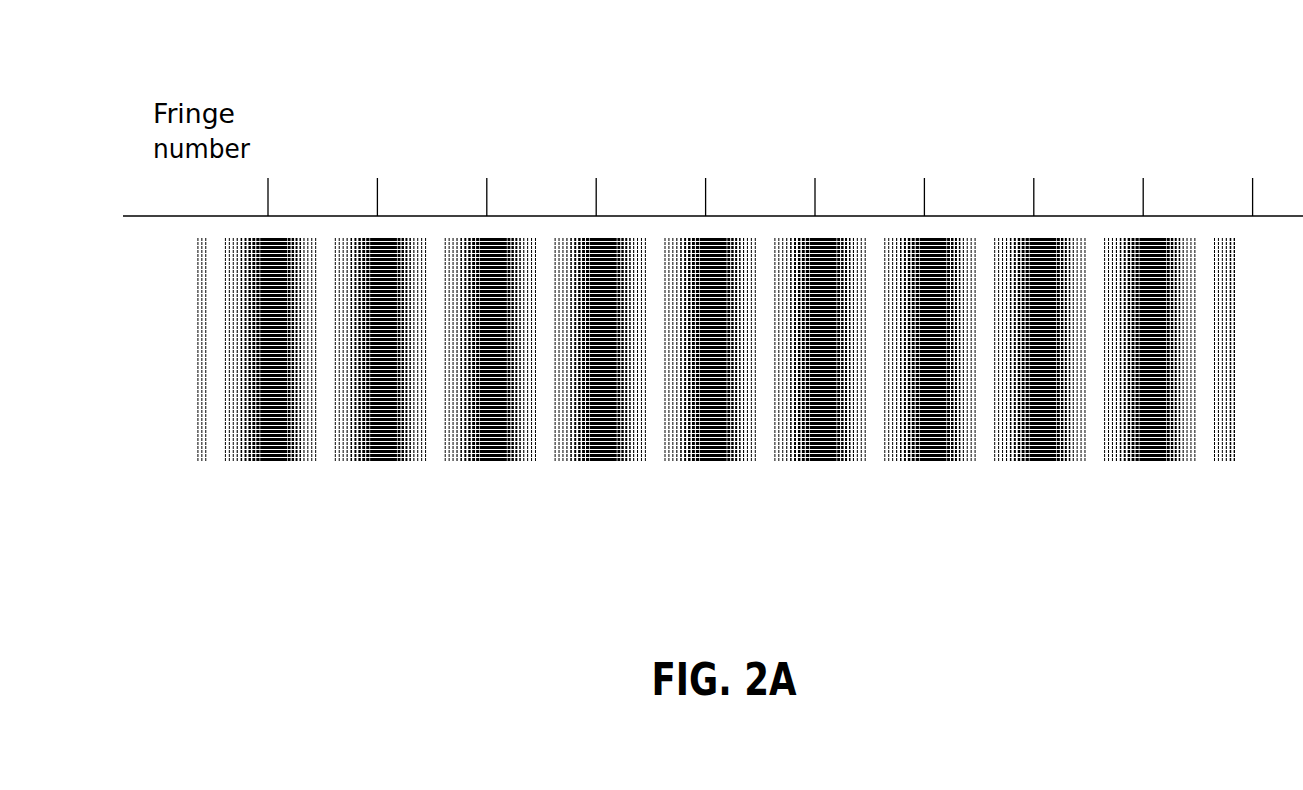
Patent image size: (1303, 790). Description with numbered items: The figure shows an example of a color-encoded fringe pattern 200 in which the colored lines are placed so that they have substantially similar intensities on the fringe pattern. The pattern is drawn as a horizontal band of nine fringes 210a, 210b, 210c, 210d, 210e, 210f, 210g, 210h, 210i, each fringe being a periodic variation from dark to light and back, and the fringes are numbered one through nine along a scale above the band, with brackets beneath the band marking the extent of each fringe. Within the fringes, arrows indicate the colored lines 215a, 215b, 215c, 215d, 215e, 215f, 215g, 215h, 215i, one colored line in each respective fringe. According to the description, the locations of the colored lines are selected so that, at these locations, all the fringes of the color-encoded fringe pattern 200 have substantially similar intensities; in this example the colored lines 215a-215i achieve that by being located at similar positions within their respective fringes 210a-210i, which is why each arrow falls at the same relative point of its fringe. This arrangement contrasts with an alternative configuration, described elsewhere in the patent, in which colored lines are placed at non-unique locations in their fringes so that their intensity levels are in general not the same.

The color-encoded fringe pattern 200 is at (1208, 598).
The fringe 210a is at (276, 482).
The fringe 210b is at (385, 482).
The fringe 210c is at (495, 482).
The fringe 210d is at (714, 482).
The fringe 210e is at (823, 482).
The fringe 210f is at (823, 482).
The fringe 210g is at (932, 482).
The fringe 210h is at (1042, 482).
The fringe 210i is at (1261, 482).
The colored line 215a is at (300, 218).
The colored line 215b is at (409, 218).
The colored line 215c is at (519, 218).
The colored line 215d is at (628, 218).
The colored line 215e is at (738, 218).
The colored line 215f is at (847, 218).
The colored line 215g is at (956, 218).
The colored line 215h is at (1066, 218).
The colored line 215i is at (1175, 218).